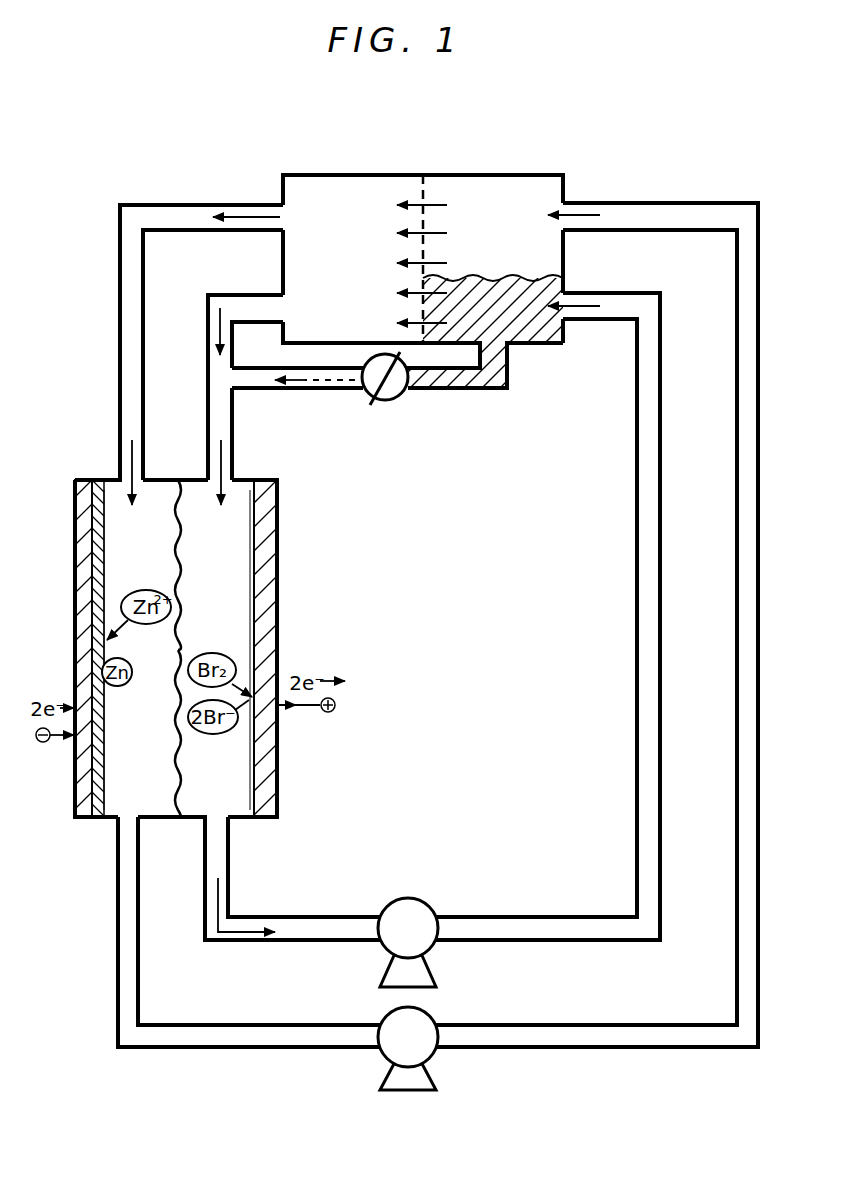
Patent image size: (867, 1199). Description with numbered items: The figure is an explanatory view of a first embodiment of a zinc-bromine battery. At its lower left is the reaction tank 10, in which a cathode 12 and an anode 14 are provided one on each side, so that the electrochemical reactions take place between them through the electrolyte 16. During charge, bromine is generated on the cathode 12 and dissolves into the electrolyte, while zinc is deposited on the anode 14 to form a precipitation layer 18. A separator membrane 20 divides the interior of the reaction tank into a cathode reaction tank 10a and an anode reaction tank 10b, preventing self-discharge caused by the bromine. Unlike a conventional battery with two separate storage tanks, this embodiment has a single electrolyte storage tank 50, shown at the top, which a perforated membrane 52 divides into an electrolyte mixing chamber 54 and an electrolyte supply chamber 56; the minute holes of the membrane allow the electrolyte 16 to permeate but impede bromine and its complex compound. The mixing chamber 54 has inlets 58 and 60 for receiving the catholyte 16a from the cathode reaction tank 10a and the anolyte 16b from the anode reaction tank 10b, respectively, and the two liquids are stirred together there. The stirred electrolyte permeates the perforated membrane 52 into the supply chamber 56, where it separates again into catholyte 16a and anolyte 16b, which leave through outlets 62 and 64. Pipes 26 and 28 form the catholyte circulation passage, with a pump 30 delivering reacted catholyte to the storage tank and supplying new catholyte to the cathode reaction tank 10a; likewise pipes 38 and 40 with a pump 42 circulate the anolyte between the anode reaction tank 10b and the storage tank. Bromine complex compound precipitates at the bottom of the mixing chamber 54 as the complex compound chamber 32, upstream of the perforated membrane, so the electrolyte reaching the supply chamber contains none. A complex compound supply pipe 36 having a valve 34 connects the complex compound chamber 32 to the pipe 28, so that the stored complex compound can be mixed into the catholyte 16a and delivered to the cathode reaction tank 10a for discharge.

The reaction tank 10 is at (180, 819).
The cathode reaction tank 10a is at (238, 806).
The anode reaction tank 10b is at (114, 820).
The cathode 12 is at (266, 549).
The anode 14 is at (84, 548).
The electrolyte 16 is at (191, 490).
The catholyte 16a is at (232, 632).
The anolyte 16b is at (112, 618).
The precipitation layer 18 is at (103, 756).
The separator membrane 20 is at (181, 760).
The pipe 26 is at (538, 915).
The pipe 28 is at (233, 416).
The pump 30 is at (428, 903).
The complex compound chamber 32 is at (531, 328).
The valve 34 is at (396, 394).
The complex compound supply pipe 36 is at (318, 389).
The pipe 38 is at (534, 1025).
The pipe 40 is at (164, 205).
The pump 42 is at (439, 1016).
The electrolyte storage tank 50 is at (372, 177).
The perforated membrane 52 is at (428, 190).
The electrolyte mixing chamber 54 is at (542, 186).
The electrolyte supply chamber 56 is at (319, 186).
The inlet 58 is at (568, 296).
The inlet 60 is at (571, 206).
The outlet 62 is at (278, 306).
The outlet 64 is at (279, 214).